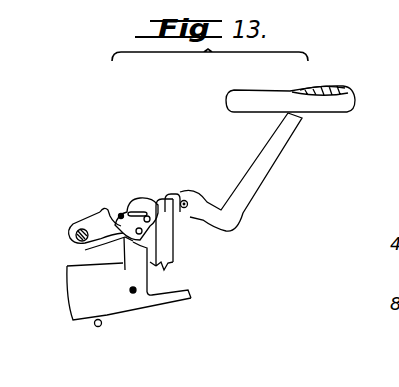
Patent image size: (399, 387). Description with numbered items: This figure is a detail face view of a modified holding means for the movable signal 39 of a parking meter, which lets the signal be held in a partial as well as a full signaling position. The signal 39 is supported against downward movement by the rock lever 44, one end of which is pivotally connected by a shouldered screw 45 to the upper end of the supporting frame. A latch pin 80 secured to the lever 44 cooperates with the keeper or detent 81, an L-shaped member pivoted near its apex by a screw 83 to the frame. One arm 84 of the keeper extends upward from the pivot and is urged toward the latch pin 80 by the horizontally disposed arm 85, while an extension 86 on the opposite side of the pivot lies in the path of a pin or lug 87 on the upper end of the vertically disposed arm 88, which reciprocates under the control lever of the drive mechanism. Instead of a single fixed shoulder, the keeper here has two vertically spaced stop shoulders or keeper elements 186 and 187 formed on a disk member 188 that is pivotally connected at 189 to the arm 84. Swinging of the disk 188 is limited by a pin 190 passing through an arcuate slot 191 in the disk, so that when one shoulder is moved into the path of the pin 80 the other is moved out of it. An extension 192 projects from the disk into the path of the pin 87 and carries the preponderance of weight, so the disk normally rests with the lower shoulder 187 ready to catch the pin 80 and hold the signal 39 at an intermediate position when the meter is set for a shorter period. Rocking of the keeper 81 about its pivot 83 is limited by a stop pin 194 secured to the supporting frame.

The movable signal 39 is at (355, 104).
The rock lever 44 is at (282, 148).
The shouldered screw 45 is at (71, 226).
The latch pin 80 is at (120, 213).
The keeper or detent 81 is at (132, 268).
The screw 83 is at (135, 293).
The arm of the keeper 84 is at (162, 272).
The horizontally disposed arm 85 is at (73, 288).
The extension 86 is at (185, 298).
The pin or lug 87 is at (199, 220).
The vertically disposed arm 88 is at (176, 263).
The stop shoulder or keeper element 186 is at (101, 212).
The stop shoulder or keeper element 187 is at (86, 250).
The disk member 188 is at (176, 254).
The pivotal connection 189 is at (174, 236).
The pin 190 is at (186, 168).
The arcuate slot 191 is at (141, 210).
The extension 192 is at (201, 194).
The stop pin 194 is at (95, 326).